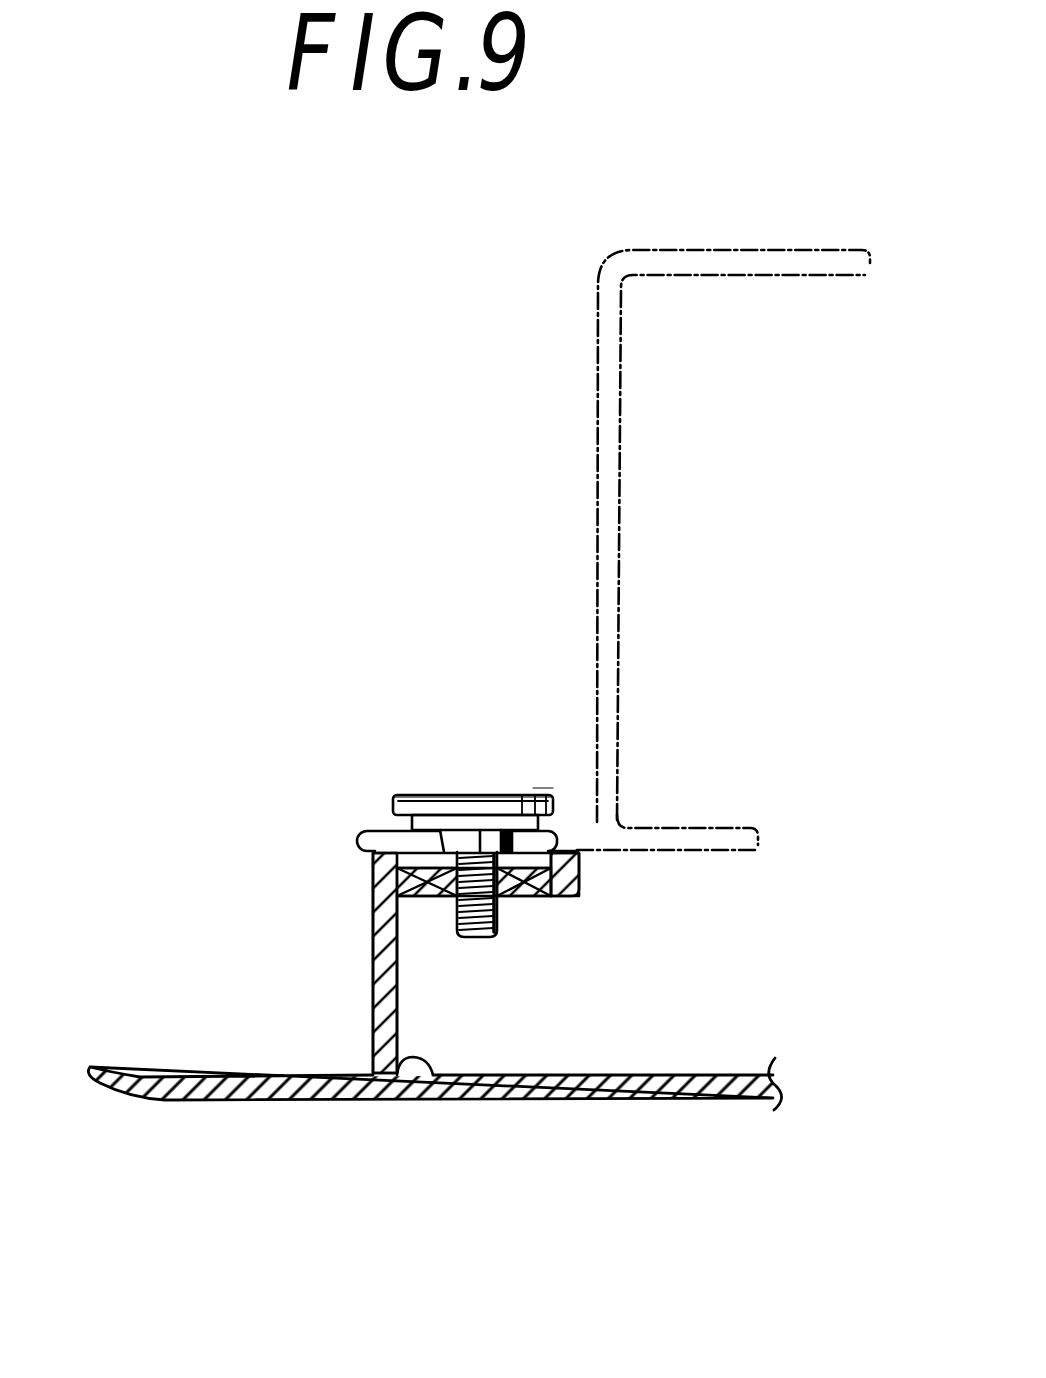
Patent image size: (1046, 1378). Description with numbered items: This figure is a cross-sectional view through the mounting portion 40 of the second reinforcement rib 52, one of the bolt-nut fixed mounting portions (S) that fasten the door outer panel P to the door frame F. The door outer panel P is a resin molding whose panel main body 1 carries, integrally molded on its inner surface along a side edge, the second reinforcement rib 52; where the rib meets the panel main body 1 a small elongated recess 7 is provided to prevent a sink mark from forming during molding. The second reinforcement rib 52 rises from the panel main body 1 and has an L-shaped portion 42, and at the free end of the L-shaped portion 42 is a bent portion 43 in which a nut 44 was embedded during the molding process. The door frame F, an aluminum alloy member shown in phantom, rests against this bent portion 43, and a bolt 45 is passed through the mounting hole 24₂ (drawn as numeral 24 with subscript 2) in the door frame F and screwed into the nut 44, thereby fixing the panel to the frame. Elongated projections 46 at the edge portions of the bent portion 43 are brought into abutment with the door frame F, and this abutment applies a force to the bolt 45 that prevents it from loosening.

The door frame F is at (590, 383).
The mounting portion 40 is at (533, 783).
The bolt 45 is at (505, 795).
The mounting hole 2 is at (462, 742).
The mounting hole 24 is at (462, 793).
The elongated projections 46 is at (360, 838).
The L-shaped portion 42 is at (373, 917).
The second reinforcement rib 52 is at (364, 998).
The bent portion 43 is at (546, 897).
The nut 44 is at (508, 897).
The small elongated recess 7 is at (425, 1096).
The panel main body 1 is at (434, 1176).
The door outer panel P is at (630, 1106).